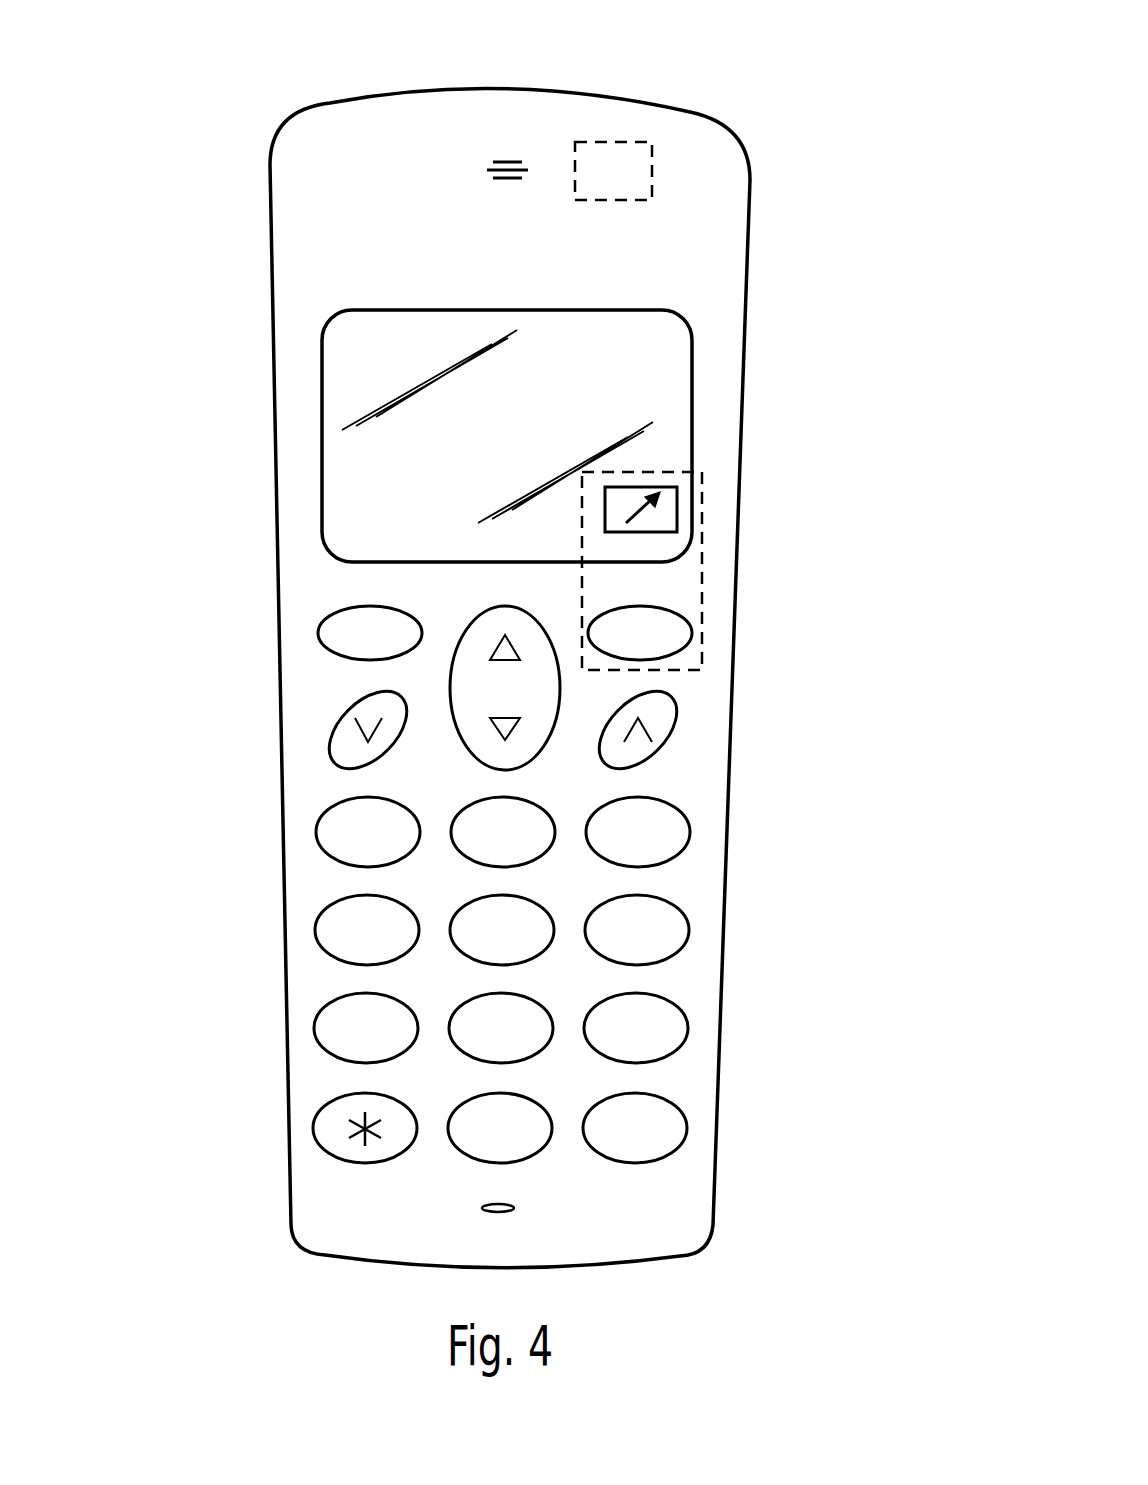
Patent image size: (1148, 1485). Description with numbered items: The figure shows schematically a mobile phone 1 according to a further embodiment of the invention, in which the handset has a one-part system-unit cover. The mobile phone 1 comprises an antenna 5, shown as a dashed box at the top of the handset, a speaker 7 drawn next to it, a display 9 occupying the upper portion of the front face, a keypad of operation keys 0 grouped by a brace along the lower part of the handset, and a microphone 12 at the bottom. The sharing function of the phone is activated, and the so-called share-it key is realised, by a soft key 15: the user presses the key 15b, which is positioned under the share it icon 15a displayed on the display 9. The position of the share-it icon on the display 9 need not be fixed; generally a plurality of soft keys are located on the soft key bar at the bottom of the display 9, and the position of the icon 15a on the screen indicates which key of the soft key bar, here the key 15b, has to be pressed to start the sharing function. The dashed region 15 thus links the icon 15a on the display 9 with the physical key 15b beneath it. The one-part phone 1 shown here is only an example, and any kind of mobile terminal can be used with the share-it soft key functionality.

The mobile phone 1 is at (826, 112).
The antenna 5 is at (648, 170).
The speaker 7 is at (487, 170).
The display 9 is at (342, 452).
The soft key 15 is at (703, 578).
The share it icon 15a is at (670, 510).
The key 15b is at (677, 633).
The keypad 0 is at (236, 606).
The microphone 12 is at (514, 1208).